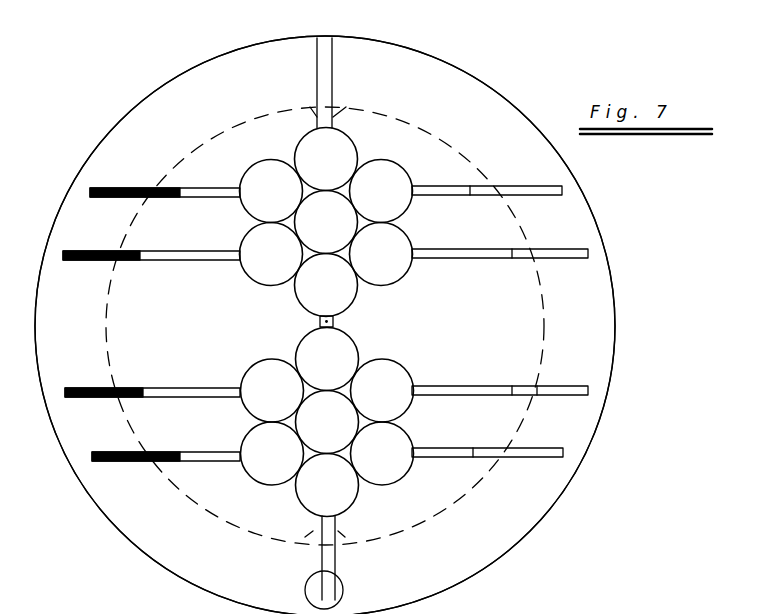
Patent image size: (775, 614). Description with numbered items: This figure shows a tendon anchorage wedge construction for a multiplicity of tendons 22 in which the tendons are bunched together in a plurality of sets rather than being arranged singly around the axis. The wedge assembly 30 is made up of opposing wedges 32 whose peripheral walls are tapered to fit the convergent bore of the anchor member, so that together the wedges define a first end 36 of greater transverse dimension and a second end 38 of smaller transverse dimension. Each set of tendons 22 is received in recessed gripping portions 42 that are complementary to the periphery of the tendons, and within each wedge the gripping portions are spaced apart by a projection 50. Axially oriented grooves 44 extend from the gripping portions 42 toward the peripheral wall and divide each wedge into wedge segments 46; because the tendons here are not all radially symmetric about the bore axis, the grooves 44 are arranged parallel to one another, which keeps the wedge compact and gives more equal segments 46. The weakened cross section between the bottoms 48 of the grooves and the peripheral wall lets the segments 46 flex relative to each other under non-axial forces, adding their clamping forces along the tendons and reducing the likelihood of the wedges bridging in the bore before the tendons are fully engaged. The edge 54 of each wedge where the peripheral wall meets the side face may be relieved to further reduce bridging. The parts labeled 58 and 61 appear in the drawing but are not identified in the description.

The tendons 22 is at (340, 148).
The wedge assembly 30 is at (556, 518).
The wedges 32 is at (612, 345).
The first end 36 is at (207, 106).
The second end 38 is at (170, 163).
The gripping portions 42 is at (296, 286).
The grooves 44 is at (193, 398).
The wedge segments 46 is at (552, 172).
The groove bottoms 48 is at (63, 256).
The projection 50 is at (340, 320).
The edge 54 is at (341, 37).
The lower support 58 is at (441, 565).
The connector 61 is at (462, 612).